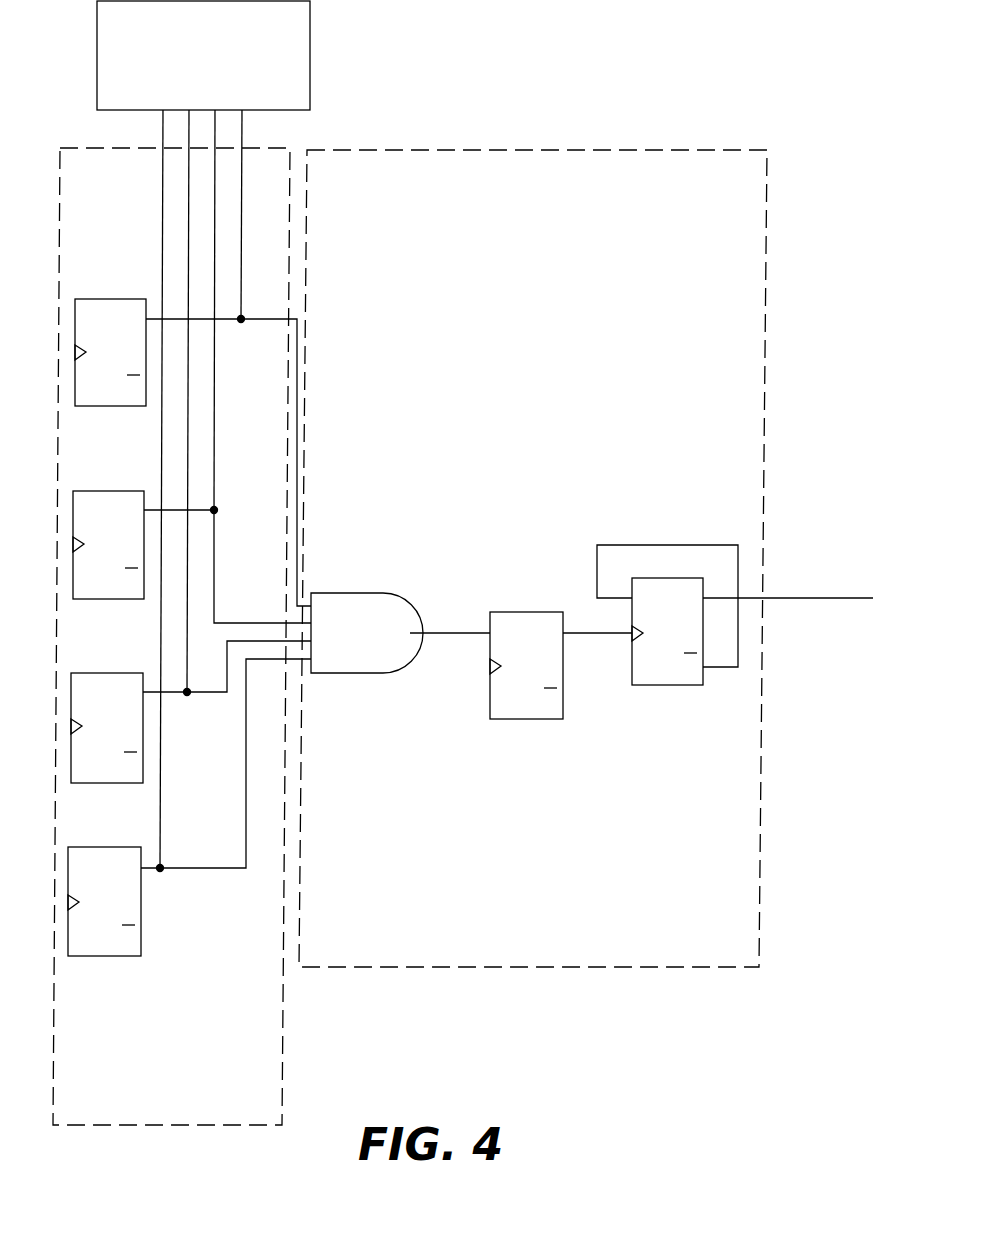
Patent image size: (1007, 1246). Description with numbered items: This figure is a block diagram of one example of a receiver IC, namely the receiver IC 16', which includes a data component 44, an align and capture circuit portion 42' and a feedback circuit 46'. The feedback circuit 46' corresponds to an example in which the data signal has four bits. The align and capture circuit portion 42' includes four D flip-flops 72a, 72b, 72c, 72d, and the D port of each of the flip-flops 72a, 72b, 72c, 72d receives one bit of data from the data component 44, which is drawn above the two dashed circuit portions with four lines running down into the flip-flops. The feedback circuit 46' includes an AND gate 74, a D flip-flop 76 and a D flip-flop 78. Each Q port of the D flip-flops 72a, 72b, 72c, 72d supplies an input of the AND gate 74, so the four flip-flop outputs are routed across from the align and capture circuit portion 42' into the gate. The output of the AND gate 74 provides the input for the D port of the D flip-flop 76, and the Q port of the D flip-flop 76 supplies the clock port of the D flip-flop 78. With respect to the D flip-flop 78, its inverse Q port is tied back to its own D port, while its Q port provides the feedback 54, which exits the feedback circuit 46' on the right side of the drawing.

The receiver IC 16' is at (593, 47).
The data component 44 is at (216, 85).
The align and capture circuit portion 42' is at (171, 636).
The feedback circuit 46' is at (533, 558).
The D flip-flop 72a is at (88, 298).
The D flip-flop 72b is at (86, 490).
The D flip-flop 72c is at (84, 672).
The D flip-flop 72d is at (82, 846).
The AND gate 74 is at (345, 592).
The D flip-flop 76 is at (522, 722).
The D flip-flop 78 is at (667, 688).
The feedback 54 is at (780, 598).